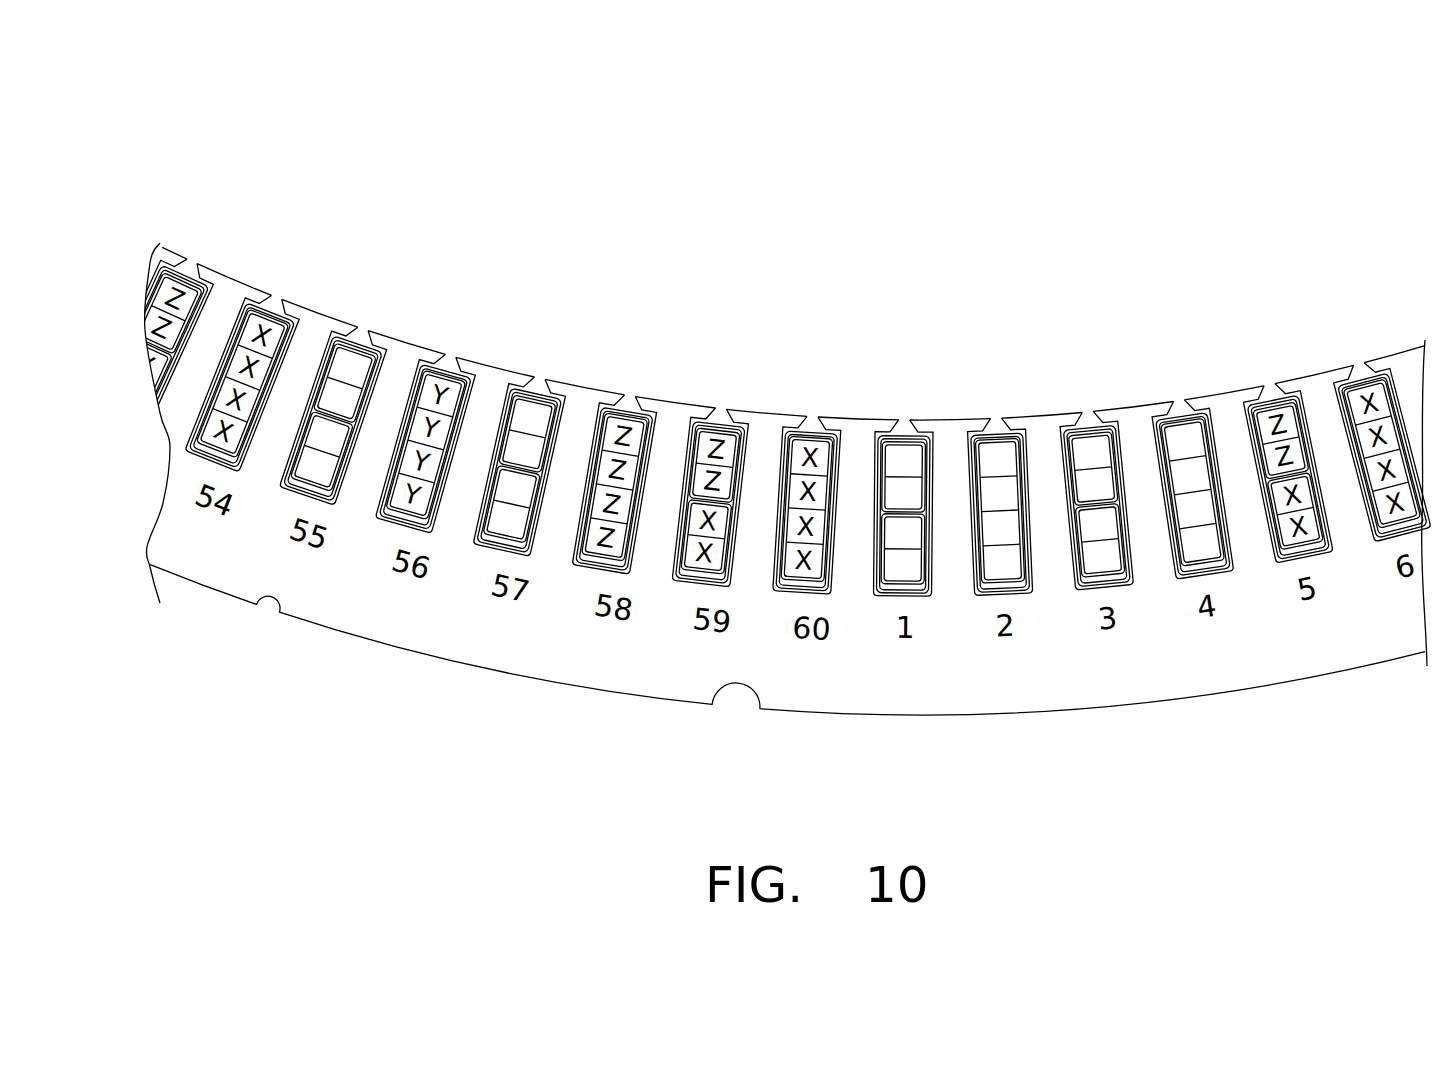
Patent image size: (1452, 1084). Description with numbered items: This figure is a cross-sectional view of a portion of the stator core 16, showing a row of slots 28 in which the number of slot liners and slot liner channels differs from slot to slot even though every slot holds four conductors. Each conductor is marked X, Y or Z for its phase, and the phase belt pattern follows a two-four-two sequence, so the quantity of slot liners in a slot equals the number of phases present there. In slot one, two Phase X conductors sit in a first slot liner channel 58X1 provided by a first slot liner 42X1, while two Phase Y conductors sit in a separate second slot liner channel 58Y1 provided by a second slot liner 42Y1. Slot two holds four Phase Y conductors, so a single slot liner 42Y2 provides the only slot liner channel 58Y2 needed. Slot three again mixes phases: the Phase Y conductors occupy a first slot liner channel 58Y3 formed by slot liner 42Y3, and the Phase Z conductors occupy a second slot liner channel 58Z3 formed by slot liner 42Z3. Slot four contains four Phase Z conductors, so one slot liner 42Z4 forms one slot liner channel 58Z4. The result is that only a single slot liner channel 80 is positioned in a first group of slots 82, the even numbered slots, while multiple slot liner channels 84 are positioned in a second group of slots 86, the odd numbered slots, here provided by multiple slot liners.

The stator core 16 is at (225, 572).
The slot 28 is at (197, 273).
The single slot liner channel 80 is at (786, 433).
The first group of slots 82 is at (1178, 398).
The multiple slot liner channels 84 is at (311, 413).
The second group of slots 86 is at (721, 407).
The first slot liner 42X1 is at (913, 374).
The first slot liner channel 58X1 is at (870, 449).
The second slot liner 42Y1 is at (909, 665).
The second slot liner channel 58Y1 is at (877, 588).
The slot liner 42Y2 is at (1032, 545).
The slot liner channel 58Y2 is at (1025, 568).
The slot liner 42Y3 is at (1103, 375).
The first slot liner channel 58Y3 is at (1105, 428).
The slot liner 42Z3 is at (1158, 662).
The second slot liner channel 58Z3 is at (1080, 581).
The slot liner 42Z4 is at (1259, 521).
The slot liner channel 58Z4 is at (1218, 545).